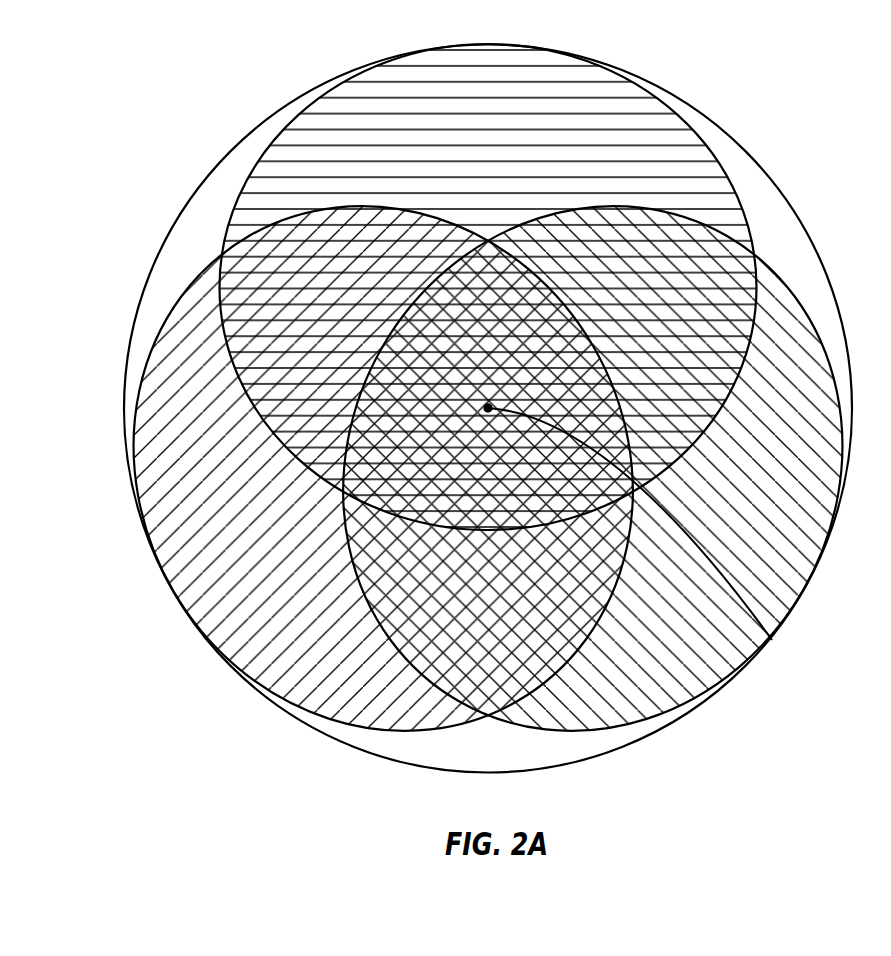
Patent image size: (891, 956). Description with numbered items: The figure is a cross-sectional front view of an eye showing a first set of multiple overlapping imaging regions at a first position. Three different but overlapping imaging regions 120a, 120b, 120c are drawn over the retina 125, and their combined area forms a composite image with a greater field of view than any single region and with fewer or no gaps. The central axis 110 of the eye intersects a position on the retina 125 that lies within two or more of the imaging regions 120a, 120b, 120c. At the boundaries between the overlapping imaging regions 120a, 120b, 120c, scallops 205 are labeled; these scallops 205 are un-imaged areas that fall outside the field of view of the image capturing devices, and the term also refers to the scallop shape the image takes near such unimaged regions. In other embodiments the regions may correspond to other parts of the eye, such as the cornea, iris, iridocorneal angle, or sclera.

The central axis 110 is at (767, 636).
The first imaging region 120a is at (363, 97).
The second imaging region 120b is at (212, 572).
The third imaging region 120c is at (765, 572).
The retina 125 is at (804, 76).
The scallops 205 is at (192, 240).